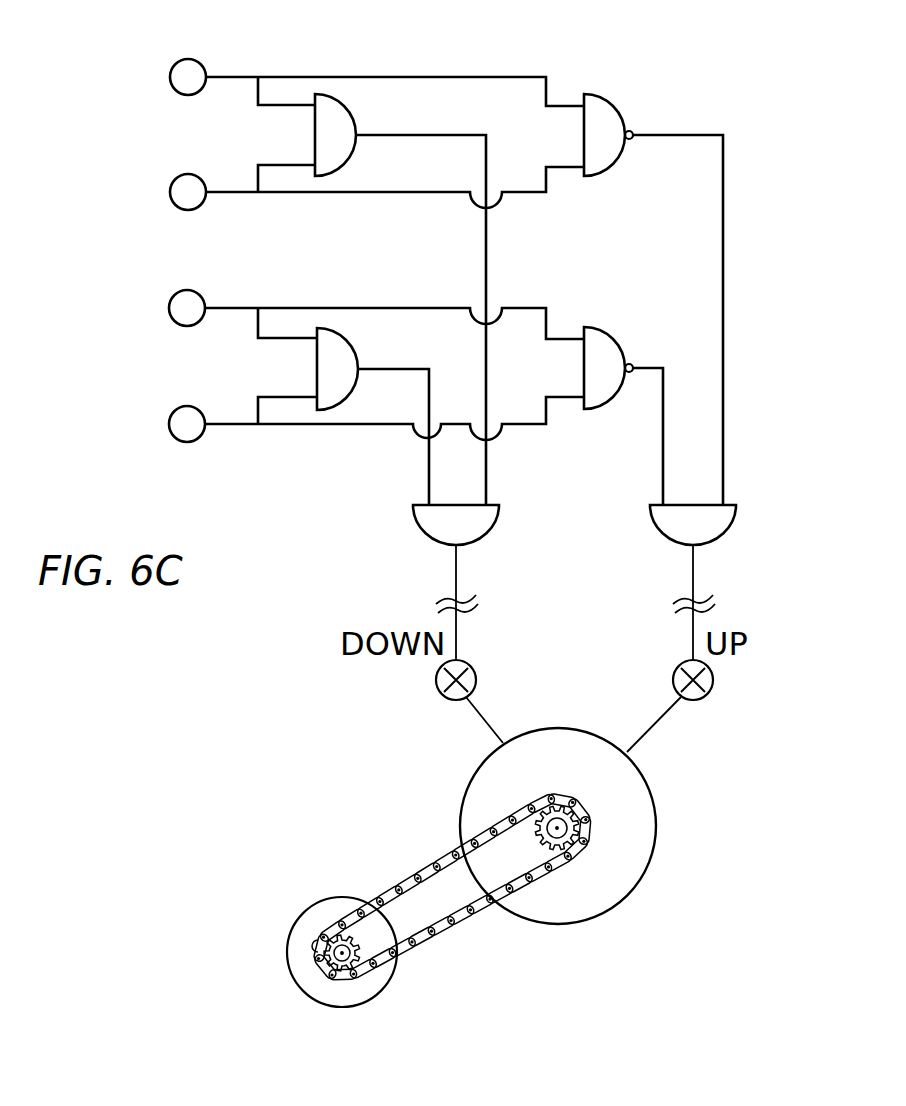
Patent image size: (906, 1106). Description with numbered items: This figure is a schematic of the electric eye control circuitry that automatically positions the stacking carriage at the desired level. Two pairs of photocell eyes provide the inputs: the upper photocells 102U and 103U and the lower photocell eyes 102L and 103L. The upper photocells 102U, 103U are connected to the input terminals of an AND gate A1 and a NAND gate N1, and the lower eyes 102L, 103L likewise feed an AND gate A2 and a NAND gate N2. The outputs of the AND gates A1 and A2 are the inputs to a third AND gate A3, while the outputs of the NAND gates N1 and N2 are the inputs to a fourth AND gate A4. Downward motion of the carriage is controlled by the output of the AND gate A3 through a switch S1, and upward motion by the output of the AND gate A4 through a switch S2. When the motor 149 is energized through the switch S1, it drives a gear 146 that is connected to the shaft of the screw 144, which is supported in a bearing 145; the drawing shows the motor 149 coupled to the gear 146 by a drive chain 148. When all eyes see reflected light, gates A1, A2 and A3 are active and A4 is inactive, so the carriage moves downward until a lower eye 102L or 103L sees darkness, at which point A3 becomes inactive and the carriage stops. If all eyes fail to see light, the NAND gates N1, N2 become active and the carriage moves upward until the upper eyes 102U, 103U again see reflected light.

The upper photocell 102U is at (170, 72).
The upper photocell 103U is at (170, 187).
The lower photocell eye 102L is at (169, 303).
The lower photocell eye 103L is at (169, 419).
The AND gate A1 is at (333, 128).
The AND gate A2 is at (335, 362).
The third AND gate A3 is at (470, 522).
The fourth AND gate A4 is at (710, 522).
The NAND gate N1 is at (607, 122).
The NAND gate N2 is at (598, 353).
The switch S1 is at (438, 672).
The switch S2 is at (697, 696).
The screw 144 is at (350, 957).
The bearing 145 is at (328, 905).
The gear 146 is at (318, 947).
The drive chain 148 is at (468, 918).
The motor 149 is at (637, 813).